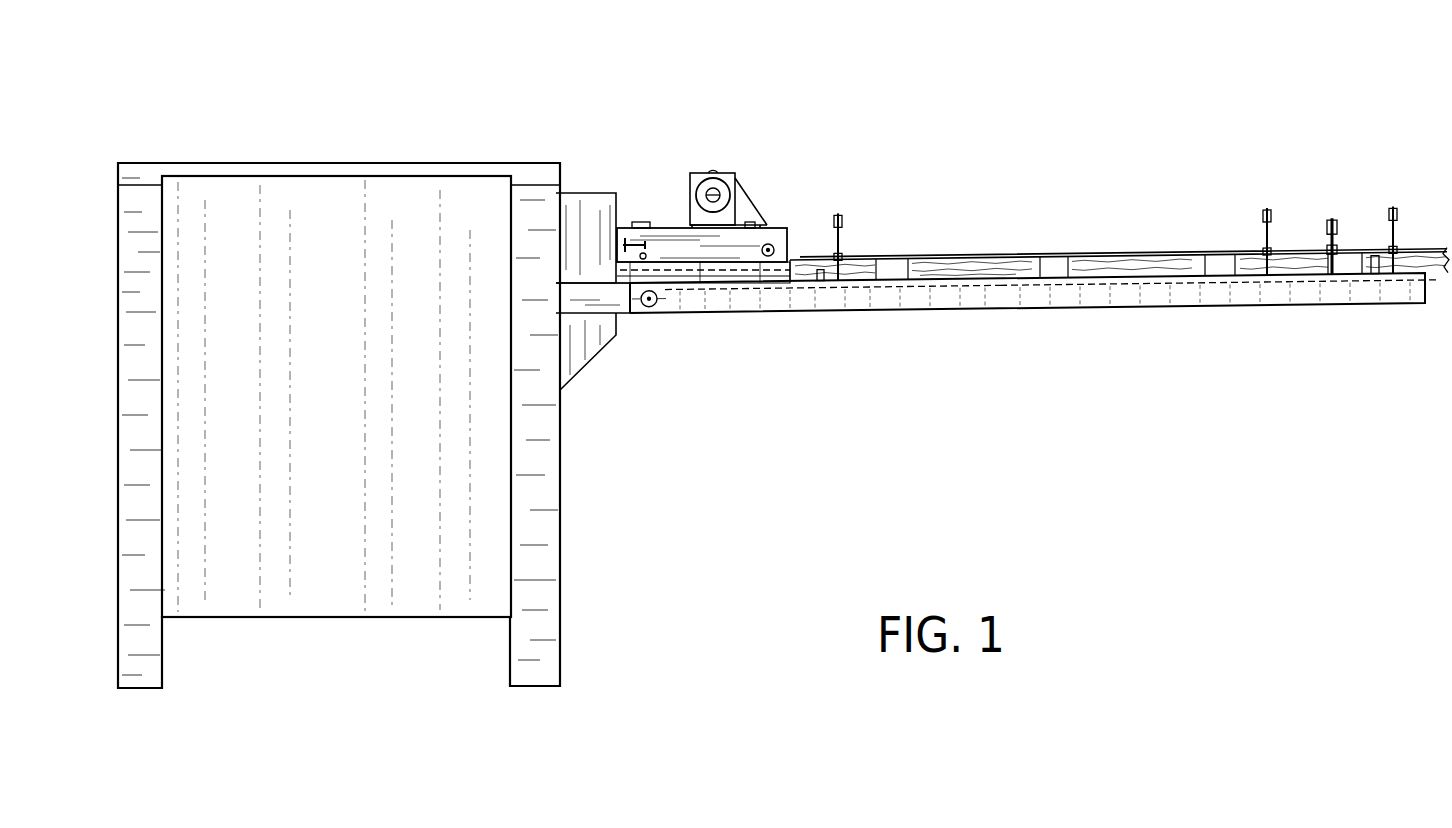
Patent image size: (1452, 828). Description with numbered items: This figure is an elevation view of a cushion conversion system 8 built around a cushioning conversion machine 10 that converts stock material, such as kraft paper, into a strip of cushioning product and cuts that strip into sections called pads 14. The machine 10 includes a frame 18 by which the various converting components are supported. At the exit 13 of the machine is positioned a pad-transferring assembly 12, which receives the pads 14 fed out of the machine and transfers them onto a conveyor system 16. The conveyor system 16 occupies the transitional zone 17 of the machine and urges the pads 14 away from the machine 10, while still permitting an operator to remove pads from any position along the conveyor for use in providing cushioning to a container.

The cushion conversion system 8 is at (977, 133).
The cushioning conversion machine 10 is at (410, 143).
The pad-transferring assembly 12 is at (772, 218).
The exit 13 is at (643, 212).
The pads 14 is at (1119, 243).
The conveyor system 16 is at (1220, 291).
The transitional zone 17 is at (815, 295).
The frame 18 is at (543, 537).